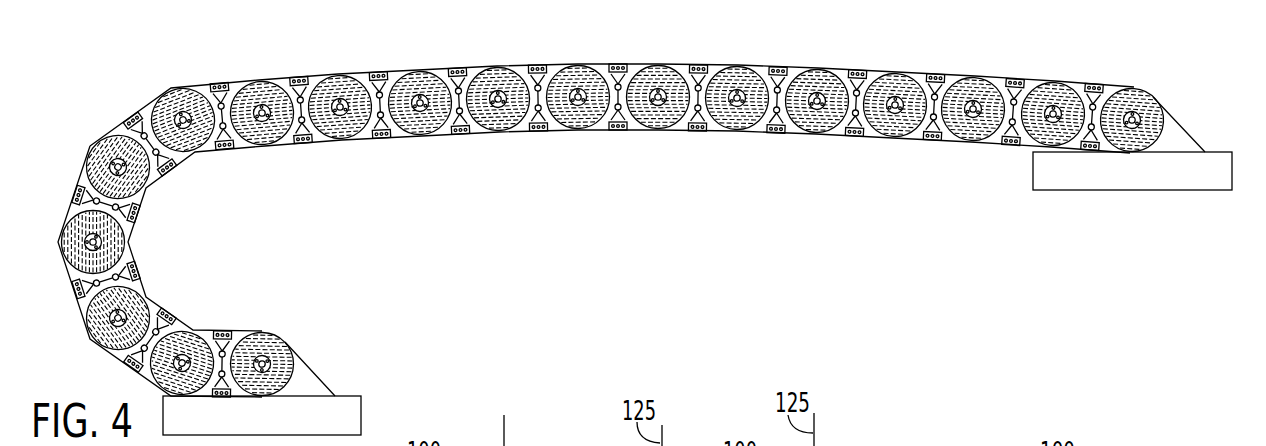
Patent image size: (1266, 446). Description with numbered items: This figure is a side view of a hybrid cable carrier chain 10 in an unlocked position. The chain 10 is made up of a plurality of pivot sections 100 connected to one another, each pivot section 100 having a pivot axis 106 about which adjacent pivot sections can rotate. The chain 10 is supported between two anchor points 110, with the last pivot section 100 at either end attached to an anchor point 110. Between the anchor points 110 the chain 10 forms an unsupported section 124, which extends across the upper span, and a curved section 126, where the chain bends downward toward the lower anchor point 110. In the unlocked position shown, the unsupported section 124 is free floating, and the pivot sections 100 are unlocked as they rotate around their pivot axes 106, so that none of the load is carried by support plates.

The hybrid cable carrier chain 10 is at (848, 43).
The pivot section 100 is at (385, 68).
The pivot axis 106 is at (579, 106).
The anchor point 110 is at (306, 381).
The unsupported section 124 is at (740, 62).
The curved section 126 is at (74, 194).